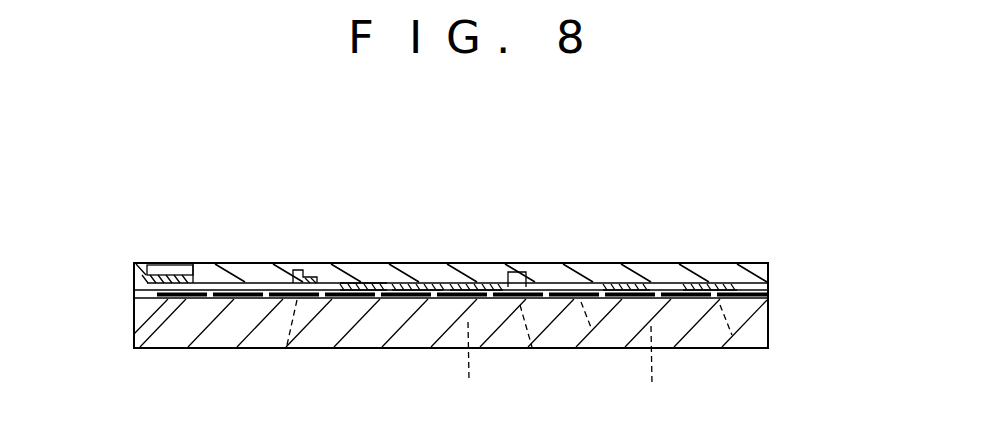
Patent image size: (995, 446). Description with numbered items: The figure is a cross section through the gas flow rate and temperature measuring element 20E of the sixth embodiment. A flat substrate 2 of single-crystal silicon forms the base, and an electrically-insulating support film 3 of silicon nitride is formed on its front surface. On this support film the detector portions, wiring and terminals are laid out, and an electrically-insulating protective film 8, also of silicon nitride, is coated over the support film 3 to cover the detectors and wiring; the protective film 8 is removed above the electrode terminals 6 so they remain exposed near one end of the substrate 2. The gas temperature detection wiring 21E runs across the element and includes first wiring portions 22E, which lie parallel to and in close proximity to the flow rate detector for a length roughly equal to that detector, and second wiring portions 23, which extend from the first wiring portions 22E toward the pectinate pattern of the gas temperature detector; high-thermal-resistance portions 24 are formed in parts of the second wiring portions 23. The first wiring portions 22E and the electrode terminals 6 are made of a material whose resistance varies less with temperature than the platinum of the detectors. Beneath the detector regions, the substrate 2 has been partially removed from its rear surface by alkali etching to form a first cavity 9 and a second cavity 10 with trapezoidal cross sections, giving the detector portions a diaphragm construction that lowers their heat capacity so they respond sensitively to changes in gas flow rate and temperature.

The flat substrate 2 is at (752, 338).
The electrically-insulating support film 3 is at (752, 282).
The electrode terminals 6 is at (171, 262).
The electrically-insulating protective film 8 is at (707, 276).
The first cavity 9 is at (469, 368).
The second cavity 10 is at (650, 371).
The gas flow rate and temperature measuring element 20E is at (451, 248).
The gas temperature detection wiring 21E is at (317, 262).
The first wiring portions 22E is at (405, 283).
The second wiring portions 23 is at (628, 282).
The high-thermal-resistance portions 24 is at (553, 278).